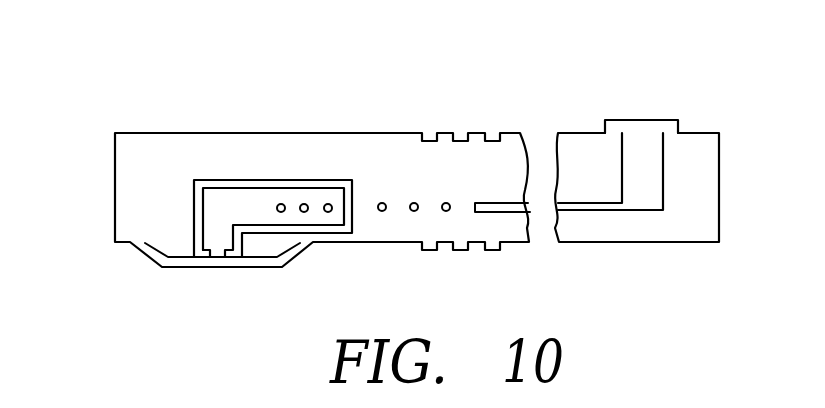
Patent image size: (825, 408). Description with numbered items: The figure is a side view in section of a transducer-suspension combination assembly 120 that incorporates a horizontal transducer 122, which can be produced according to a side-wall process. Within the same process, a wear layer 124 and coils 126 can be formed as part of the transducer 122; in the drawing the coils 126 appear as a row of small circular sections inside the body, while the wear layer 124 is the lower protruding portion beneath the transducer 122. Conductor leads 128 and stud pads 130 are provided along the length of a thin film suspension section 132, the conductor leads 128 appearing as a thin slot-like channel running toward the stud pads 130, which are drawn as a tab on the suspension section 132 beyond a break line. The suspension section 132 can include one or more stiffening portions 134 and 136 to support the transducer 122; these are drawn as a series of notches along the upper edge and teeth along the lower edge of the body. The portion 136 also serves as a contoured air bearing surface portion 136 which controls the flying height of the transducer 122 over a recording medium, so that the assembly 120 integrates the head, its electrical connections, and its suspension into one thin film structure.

The transducer-suspension combination assembly 120 is at (138, 100).
The horizontal transducer 122 is at (243, 178).
The wear layer 124 is at (255, 267).
The coils 126 is at (306, 204).
The conductor leads 128 is at (515, 202).
The stud pads 130 is at (645, 120).
The thin film suspension section 132 is at (700, 197).
The stiffening portion 134 is at (462, 132).
The stiffening portion / contoured air bearing surface portion 136 is at (457, 250).